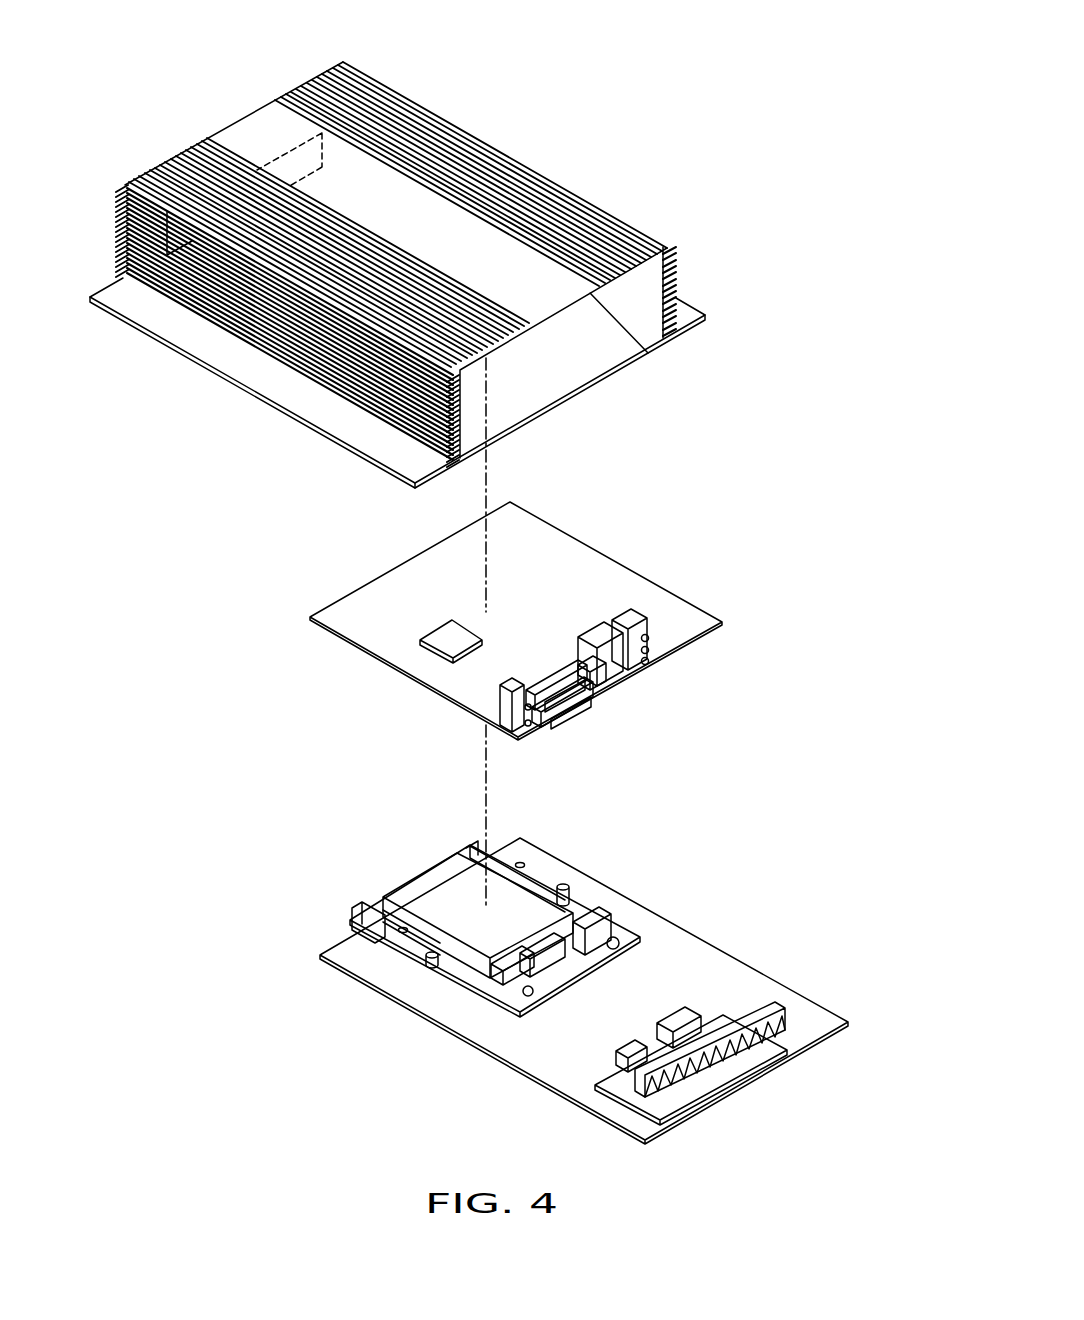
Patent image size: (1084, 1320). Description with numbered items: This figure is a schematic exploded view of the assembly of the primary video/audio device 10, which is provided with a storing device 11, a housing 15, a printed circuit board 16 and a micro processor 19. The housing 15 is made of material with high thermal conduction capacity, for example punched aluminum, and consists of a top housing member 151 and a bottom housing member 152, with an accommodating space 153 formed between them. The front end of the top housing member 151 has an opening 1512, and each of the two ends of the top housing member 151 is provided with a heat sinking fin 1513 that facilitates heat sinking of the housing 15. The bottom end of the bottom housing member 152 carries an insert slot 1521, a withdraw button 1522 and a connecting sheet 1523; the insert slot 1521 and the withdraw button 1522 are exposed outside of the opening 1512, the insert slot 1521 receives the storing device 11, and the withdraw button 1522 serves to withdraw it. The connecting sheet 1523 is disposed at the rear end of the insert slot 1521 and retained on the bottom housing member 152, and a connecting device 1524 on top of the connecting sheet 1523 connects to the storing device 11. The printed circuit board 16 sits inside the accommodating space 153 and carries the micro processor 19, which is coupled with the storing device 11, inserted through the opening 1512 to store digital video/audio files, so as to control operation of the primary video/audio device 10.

The primary video/audio device 10 is at (722, 205).
The storing device 11 is at (478, 875).
The housing 15 is at (565, 178).
The top housing member 151 is at (440, 115).
The opening 1512 is at (300, 165).
The heat sinking fin 1513 is at (405, 393).
The accommodating space 153 is at (540, 338).
The printed circuit board 16 is at (660, 592).
The micro processor 19 is at (445, 640).
The bottom housing member 152 is at (745, 990).
The insert slot 1521 is at (402, 998).
The withdraw button 1522 is at (352, 912).
The connecting sheet 1523 is at (556, 983).
The connecting device 1524 is at (522, 975).